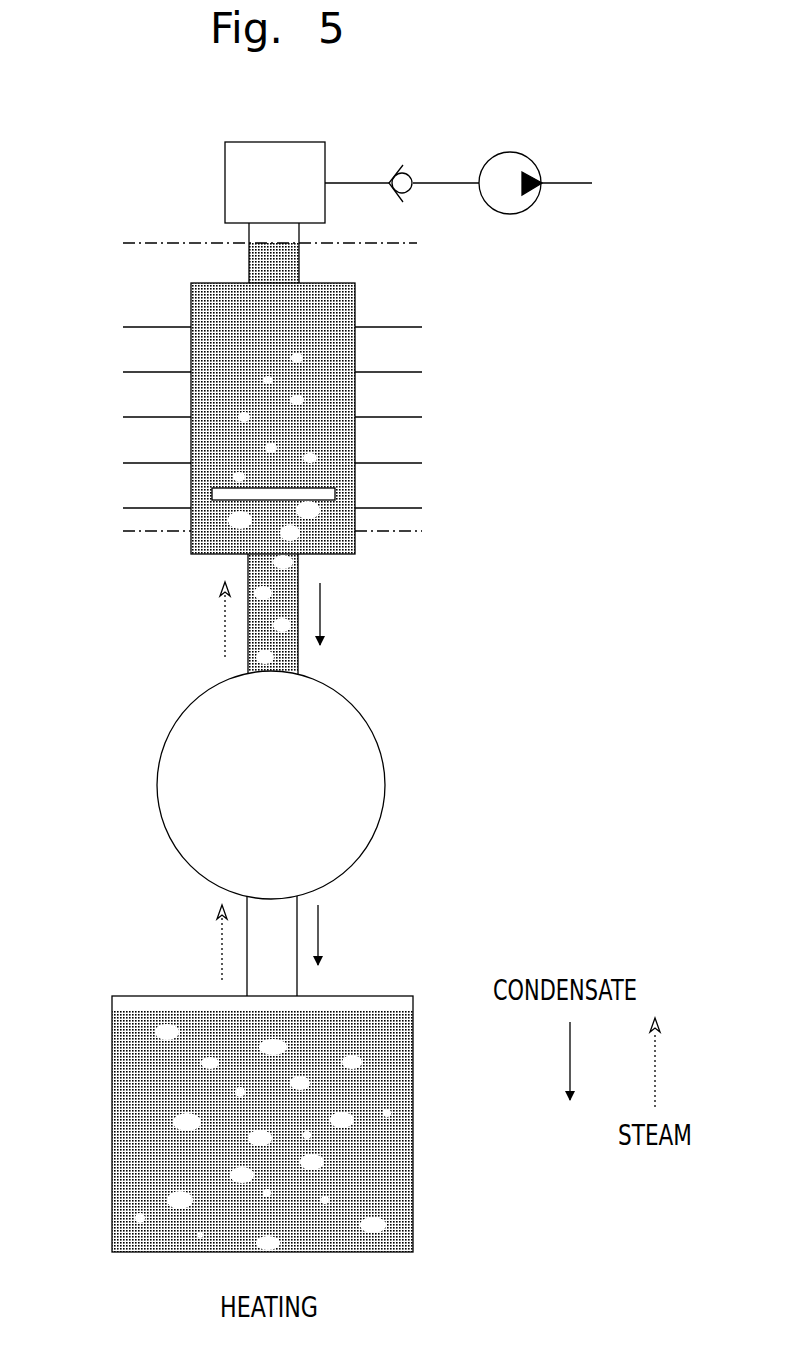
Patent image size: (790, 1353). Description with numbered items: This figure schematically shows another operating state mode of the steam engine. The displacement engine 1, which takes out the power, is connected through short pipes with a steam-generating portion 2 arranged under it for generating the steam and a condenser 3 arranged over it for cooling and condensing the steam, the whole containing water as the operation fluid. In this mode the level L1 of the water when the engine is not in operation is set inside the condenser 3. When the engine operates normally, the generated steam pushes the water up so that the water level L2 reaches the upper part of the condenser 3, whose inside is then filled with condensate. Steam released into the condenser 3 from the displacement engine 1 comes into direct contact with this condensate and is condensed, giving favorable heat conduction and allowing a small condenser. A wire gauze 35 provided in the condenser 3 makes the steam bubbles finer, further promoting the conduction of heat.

The displacement engine 1 is at (370, 722).
The steam-generating portion 2 is at (111, 1051).
The condenser 3 is at (363, 352).
The wire gauze 35 is at (211, 492).
The water level when the engine is not in operation L1 is at (252, 532).
The water level during normal operation L2 is at (251, 243).